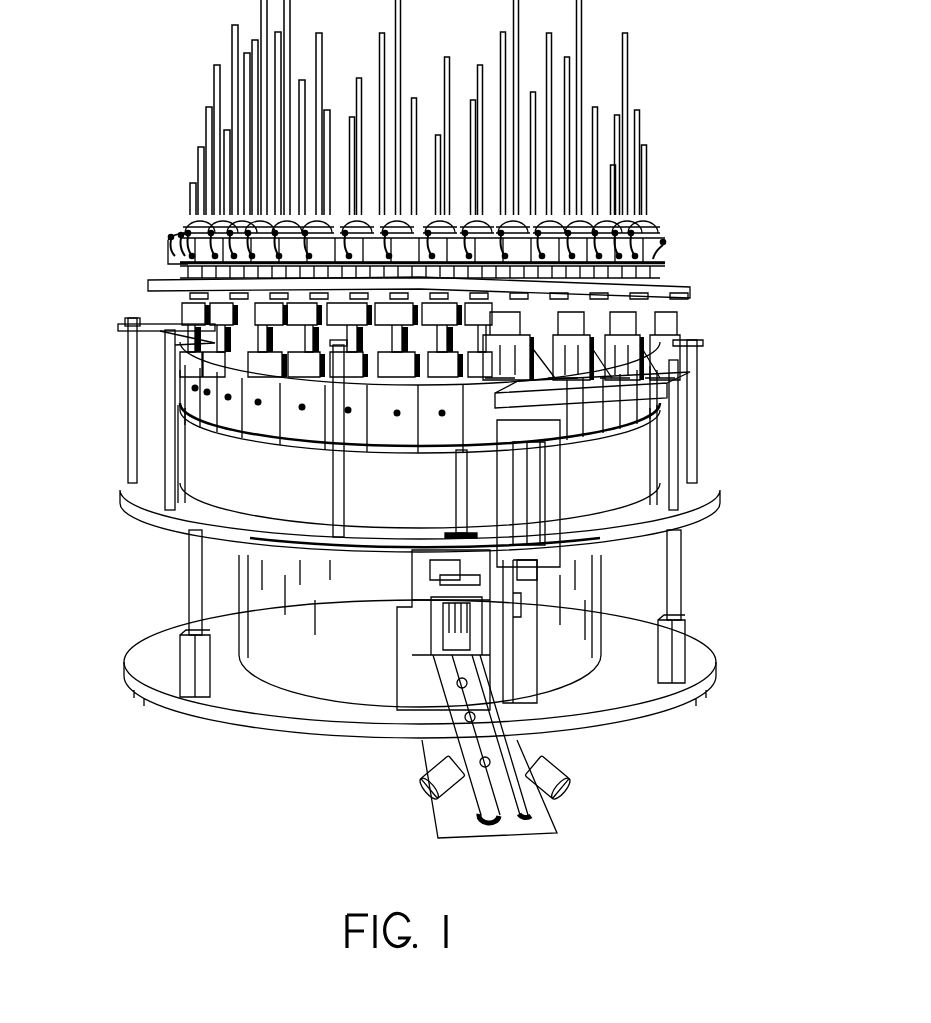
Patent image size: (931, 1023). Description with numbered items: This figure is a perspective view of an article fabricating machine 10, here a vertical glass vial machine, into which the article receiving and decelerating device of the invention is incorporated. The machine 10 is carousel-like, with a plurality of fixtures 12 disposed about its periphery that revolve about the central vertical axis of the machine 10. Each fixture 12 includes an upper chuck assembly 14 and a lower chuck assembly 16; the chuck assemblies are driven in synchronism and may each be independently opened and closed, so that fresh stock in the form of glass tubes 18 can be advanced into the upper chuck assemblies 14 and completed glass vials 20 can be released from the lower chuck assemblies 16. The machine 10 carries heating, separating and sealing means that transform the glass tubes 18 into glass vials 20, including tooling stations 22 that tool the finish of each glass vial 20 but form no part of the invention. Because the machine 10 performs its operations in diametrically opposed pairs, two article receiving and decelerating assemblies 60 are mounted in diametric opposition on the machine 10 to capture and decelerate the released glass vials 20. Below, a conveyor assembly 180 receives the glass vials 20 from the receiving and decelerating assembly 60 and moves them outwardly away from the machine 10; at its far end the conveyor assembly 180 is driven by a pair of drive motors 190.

The glass vial machine 10 is at (670, 86).
The fixtures 12 is at (680, 262).
The upper chuck assembly 14 is at (178, 307).
The lower chuck assembly 16 is at (170, 343).
The glass tubes 18 is at (581, 34).
The glass vials 20 is at (488, 753).
The tooling stations 22 is at (670, 335).
The article receiving and decelerating assembly 60 is at (398, 620).
The conveyor assembly 180 is at (338, 765).
The drive motors 190 is at (505, 800).